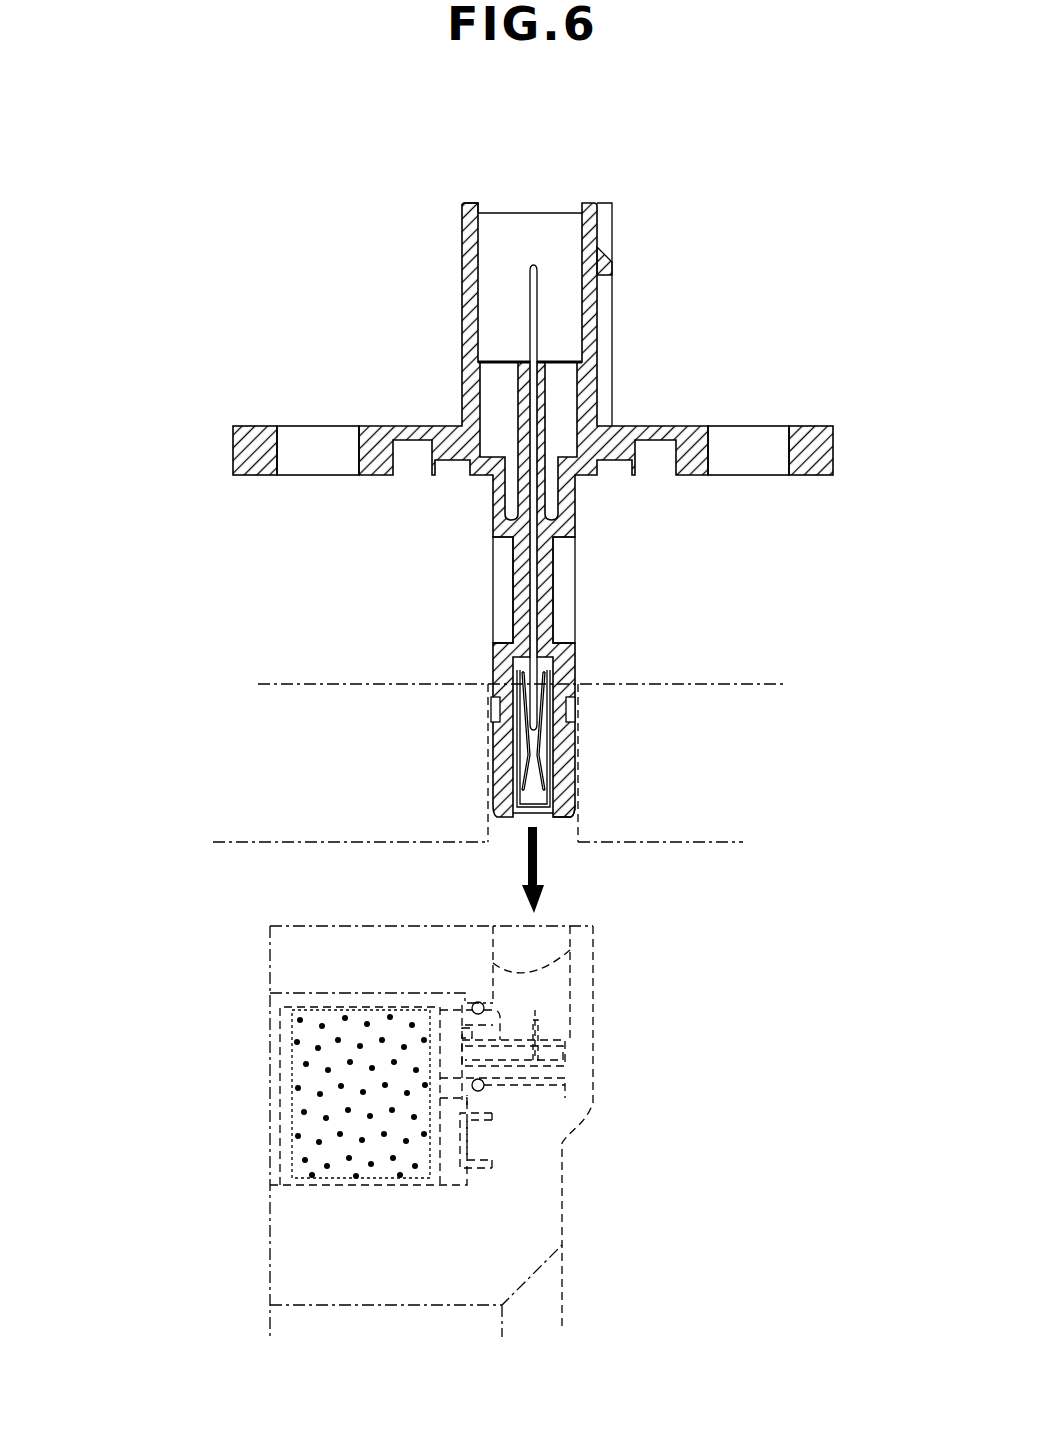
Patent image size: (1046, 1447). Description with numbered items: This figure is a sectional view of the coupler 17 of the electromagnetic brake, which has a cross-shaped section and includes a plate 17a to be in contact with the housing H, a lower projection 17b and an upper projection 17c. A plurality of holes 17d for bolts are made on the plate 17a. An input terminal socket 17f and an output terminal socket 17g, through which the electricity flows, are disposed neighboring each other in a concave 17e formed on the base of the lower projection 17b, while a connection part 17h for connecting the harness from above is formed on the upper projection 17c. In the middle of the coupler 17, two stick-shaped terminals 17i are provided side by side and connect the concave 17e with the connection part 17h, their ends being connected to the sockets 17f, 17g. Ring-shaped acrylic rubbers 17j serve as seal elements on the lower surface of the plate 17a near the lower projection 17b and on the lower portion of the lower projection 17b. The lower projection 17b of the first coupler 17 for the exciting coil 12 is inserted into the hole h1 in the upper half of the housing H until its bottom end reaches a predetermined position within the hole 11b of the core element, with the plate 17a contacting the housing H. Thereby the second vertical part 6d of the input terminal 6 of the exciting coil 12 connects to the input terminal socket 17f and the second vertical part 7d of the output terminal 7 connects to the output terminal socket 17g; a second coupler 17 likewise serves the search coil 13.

The coupler 17 is at (471, 458).
The plate 17a is at (250, 451).
The lower projection 17b is at (578, 656).
The upper projection 17c is at (606, 262).
The holes for bolts 17d is at (284, 448).
The concave 17e is at (552, 828).
The input terminal socket 17f is at (632, 738).
The output terminal socket 17g is at (537, 750).
The connection part 17h is at (583, 238).
The terminals 17i is at (560, 540).
The ring-shaped acrylic rubbers 17j is at (490, 708).
The housing H is at (338, 708).
The hole h1 is at (563, 832).
The hole for wiring the exciting coil 11b is at (573, 950).
The input terminal 6 is at (581, 1047).
The output terminal 7 is at (535, 1035).
The second vertical part 6d is at (592, 1052).
The second vertical part 7d is at (548, 1050).
The exciting coil 12 is at (262, 1078).
The search coil 13 is at (507, 1147).